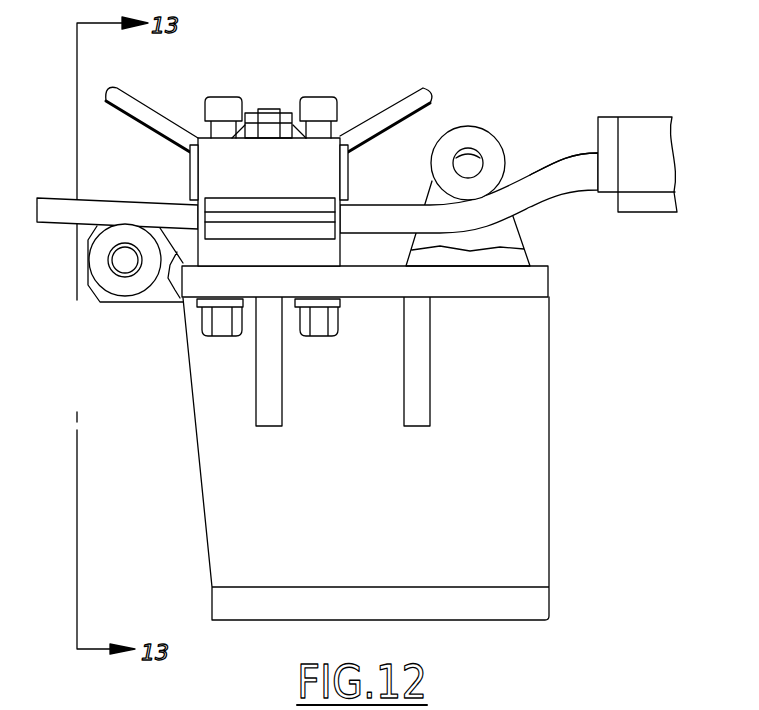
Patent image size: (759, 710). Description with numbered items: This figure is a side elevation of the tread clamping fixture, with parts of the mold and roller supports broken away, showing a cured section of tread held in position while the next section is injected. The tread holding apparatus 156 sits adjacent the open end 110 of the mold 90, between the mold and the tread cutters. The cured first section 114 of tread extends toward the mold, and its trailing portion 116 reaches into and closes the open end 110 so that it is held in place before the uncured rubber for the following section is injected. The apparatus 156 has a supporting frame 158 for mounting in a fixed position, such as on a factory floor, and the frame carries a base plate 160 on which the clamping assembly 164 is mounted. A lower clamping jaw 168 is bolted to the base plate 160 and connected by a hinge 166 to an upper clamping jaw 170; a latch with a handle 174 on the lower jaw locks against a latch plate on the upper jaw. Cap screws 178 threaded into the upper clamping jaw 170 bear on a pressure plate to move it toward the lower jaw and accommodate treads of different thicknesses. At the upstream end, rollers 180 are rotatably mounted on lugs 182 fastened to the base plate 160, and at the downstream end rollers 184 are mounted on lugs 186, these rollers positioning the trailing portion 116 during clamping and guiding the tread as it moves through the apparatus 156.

The mold 90 is at (667, 85).
The open end 110 is at (618, 128).
The first section of tread 114 is at (363, 213).
The trailing portion 116 is at (557, 190).
The tread holding apparatus 156 is at (552, 388).
The supporting frame 158 is at (538, 457).
The base plate 160 is at (532, 285).
The clamping assembly 164 is at (343, 133).
The hinge 166 is at (212, 208).
The lower clamping jaw 168 is at (223, 253).
The upper clamping jaw 170 is at (248, 152).
The handle 174 is at (133, 100).
The cap screws 178 is at (220, 97).
The rollers 180 is at (477, 140).
The lugs 182 is at (510, 183).
The rollers 184 is at (98, 258).
The lugs 186 is at (107, 300).